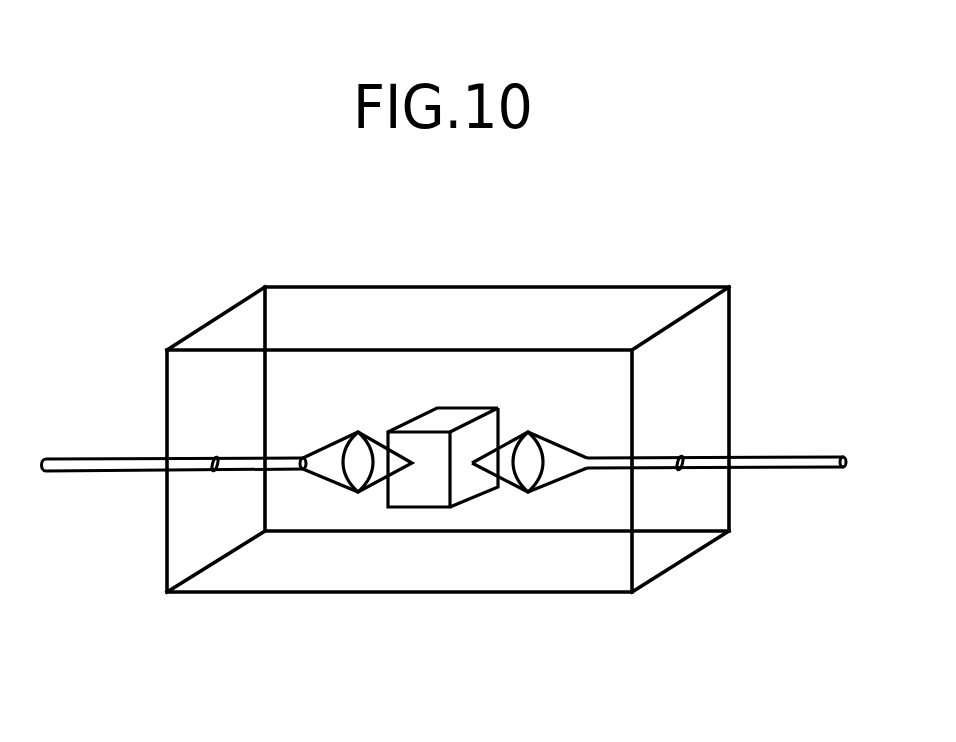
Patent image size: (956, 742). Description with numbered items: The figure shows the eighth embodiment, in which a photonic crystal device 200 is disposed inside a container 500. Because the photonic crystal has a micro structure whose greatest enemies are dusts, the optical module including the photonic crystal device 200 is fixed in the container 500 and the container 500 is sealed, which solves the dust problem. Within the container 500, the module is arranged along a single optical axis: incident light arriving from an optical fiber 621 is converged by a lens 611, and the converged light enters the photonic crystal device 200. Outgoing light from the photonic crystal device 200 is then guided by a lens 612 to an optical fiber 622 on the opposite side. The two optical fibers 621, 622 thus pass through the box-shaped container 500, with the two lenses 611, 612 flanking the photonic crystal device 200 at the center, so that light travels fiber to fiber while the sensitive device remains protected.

The container 500 is at (373, 313).
The photonic crystal device 200 is at (448, 422).
The lens 611 is at (358, 493).
The lens 612 is at (528, 493).
The optical fiber 621 is at (102, 458).
The optical fiber 622 is at (788, 453).